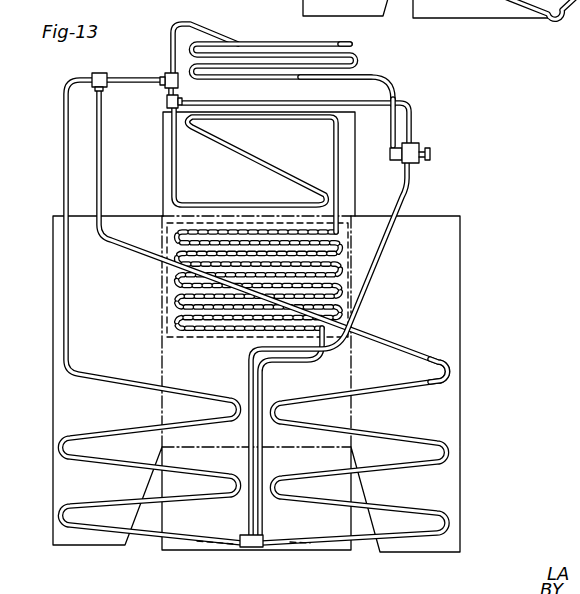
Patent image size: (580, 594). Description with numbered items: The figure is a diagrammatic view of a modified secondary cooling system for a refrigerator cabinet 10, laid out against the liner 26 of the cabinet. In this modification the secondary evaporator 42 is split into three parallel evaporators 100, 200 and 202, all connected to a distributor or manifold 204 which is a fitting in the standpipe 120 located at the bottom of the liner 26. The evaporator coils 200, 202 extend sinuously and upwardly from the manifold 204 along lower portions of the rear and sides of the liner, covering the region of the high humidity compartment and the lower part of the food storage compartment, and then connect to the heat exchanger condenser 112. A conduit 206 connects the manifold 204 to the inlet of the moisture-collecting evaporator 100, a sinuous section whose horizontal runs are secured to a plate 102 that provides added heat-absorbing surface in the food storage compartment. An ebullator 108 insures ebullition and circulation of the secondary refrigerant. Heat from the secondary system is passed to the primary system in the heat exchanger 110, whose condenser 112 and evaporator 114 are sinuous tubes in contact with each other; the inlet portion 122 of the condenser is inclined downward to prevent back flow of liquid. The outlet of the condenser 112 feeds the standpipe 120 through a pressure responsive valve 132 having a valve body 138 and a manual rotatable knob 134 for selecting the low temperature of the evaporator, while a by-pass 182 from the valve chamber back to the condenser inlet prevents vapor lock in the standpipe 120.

The refrigerator cabinet 10 is at (553, 18).
The liner 26 is at (478, 13).
The evaporator 42 is at (449, 372).
The plate section 100 is at (167, 271).
The plate 102 is at (165, 301).
The ebullator 108 is at (256, 160).
The heat exchanger 110 is at (358, 62).
The refrigerant condenser 112 is at (330, 80).
The refrigerant evaporator 114 is at (354, 44).
The standpipe 120 is at (398, 92).
The inlet portion 122 is at (207, 27).
The pressure responsive valve 132 is at (419, 165).
The manual adjustment rotatable knob 134 is at (431, 151).
The valve body 138 is at (392, 160).
The by-pass 182 is at (412, 116).
The evaporator coil 200 is at (176, 502).
The evaporator coil 202 is at (291, 503).
The manifold 204 is at (252, 548).
The conduit 206 is at (265, 372).